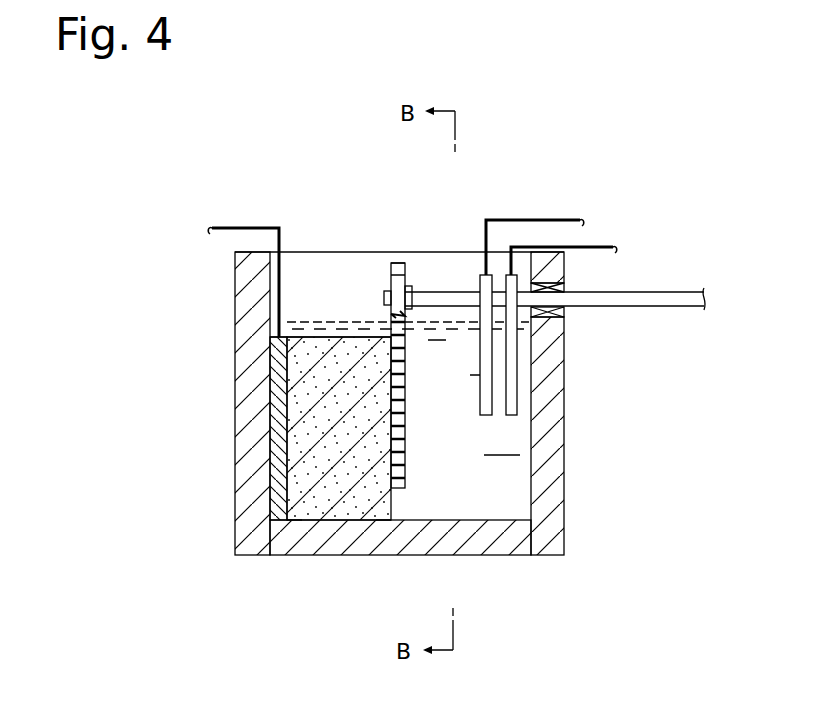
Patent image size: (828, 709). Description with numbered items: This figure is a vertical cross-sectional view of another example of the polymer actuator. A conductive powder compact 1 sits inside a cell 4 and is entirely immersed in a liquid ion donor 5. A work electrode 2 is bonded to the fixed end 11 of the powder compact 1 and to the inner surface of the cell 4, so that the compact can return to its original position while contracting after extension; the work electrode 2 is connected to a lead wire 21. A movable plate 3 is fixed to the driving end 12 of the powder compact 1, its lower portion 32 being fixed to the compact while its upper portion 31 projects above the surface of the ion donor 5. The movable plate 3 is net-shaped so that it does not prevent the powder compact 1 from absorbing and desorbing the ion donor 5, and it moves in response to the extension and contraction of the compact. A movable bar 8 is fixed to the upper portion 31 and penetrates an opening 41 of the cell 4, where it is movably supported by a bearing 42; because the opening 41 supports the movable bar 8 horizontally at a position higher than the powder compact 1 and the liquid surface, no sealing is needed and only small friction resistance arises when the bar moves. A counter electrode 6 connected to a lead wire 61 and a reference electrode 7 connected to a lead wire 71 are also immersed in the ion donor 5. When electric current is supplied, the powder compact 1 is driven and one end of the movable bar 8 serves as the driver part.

The conductive powder compact 1 is at (314, 352).
The fixed end 11 is at (285, 497).
The driving end 12 is at (390, 497).
The work electrode 2 is at (283, 362).
The lead wire 21 is at (228, 227).
The movable plate 3 is at (410, 338).
The upper portion 31 is at (405, 278).
The lower portion 32 is at (405, 370).
The cell 4 is at (564, 405).
The opening 41 is at (562, 301).
The bearing 42 is at (566, 312).
The ion donor 5 is at (352, 327).
The counter electrode 6 is at (480, 283).
The lead wire 61 is at (553, 218).
The reference electrode 7 is at (506, 290).
The lead wire 71 is at (587, 244).
The movable bar 8 is at (686, 294).